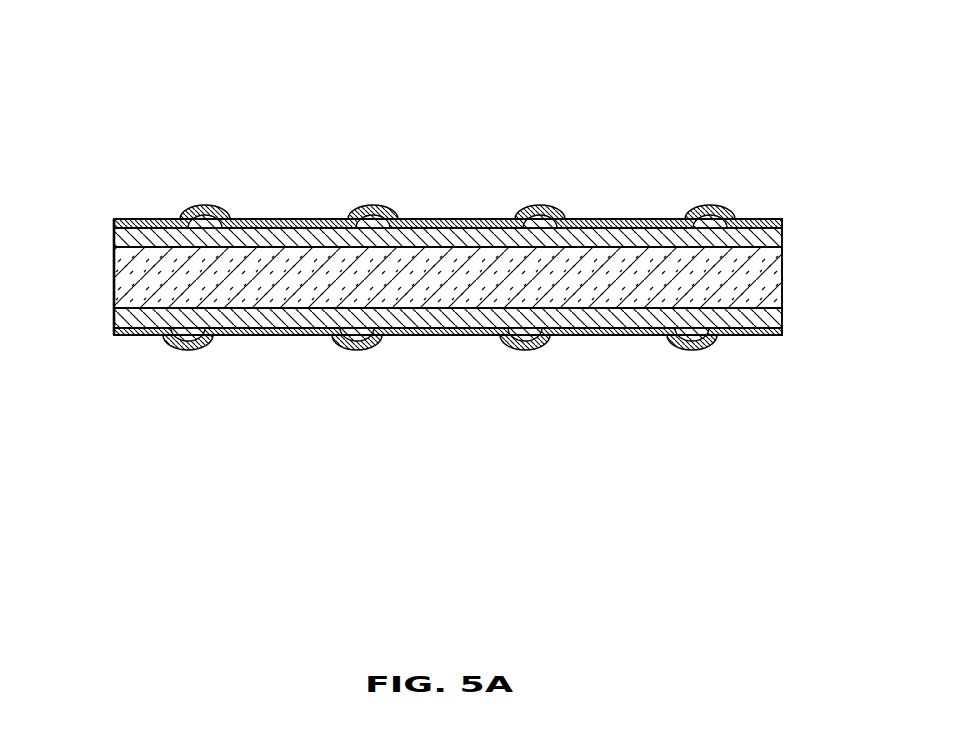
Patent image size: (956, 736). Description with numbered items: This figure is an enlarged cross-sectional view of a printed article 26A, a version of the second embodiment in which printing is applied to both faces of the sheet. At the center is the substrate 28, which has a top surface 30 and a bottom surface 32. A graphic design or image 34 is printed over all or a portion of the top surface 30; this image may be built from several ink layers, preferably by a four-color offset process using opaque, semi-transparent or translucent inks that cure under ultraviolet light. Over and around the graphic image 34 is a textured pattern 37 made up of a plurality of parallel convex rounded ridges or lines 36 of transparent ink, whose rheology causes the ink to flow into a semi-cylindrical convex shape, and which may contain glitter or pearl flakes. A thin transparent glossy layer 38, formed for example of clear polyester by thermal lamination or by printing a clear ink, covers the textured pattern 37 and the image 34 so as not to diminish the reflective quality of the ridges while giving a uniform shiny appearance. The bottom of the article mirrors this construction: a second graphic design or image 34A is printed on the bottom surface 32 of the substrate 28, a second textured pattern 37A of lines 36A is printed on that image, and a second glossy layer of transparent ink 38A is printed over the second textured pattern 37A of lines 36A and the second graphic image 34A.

The printed article 26A is at (426, 62).
The substrate 28 is at (783, 285).
The top surface 30 is at (113, 247).
The bottom surface 32 is at (113, 309).
The graphic design or image 34 is at (783, 240).
The second graphic design or image 34A is at (783, 316).
The lines 36 is at (189, 203).
The lines 36A is at (165, 346).
The textured pattern 37 is at (448, 161).
The second textured pattern 37A is at (448, 406).
The transparent glossy layer 38 is at (618, 218).
The second glossy layer of transparent ink 38A is at (275, 337).